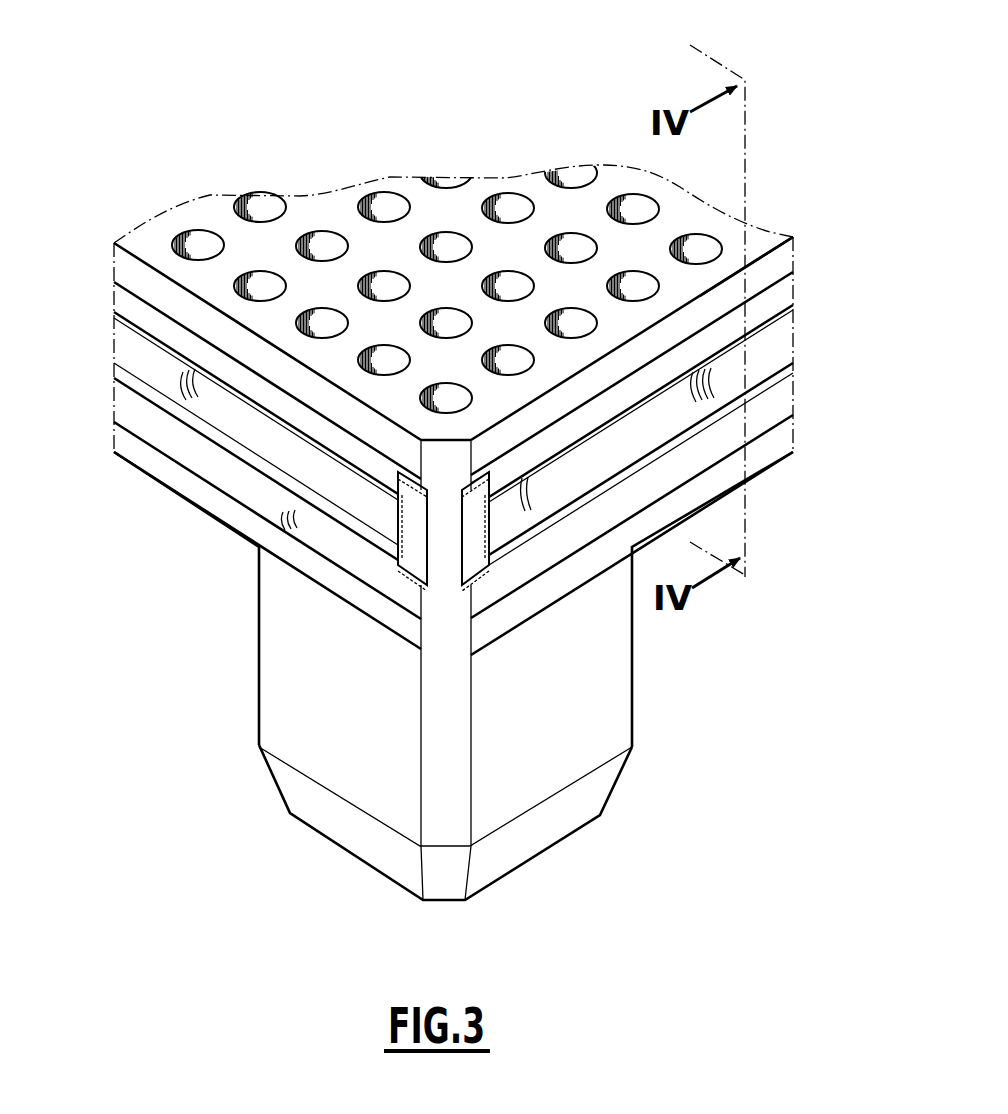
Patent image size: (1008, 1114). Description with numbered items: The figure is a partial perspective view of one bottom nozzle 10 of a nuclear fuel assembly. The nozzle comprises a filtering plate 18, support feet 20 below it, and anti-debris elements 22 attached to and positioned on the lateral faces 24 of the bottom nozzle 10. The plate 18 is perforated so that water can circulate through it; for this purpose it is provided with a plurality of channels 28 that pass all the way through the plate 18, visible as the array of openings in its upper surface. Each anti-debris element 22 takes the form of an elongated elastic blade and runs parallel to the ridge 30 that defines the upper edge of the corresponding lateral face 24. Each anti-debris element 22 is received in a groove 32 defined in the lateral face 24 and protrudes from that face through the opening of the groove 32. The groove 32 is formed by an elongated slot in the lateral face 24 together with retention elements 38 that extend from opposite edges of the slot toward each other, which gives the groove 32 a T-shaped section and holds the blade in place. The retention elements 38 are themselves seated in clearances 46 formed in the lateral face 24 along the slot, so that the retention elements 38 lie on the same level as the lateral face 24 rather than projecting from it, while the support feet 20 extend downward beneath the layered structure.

The bottom nozzle 10 is at (596, 127).
The filtering plate 18 is at (490, 187).
The channels 28 is at (377, 217).
The ridge 30 is at (765, 240).
The retention elements 38 is at (110, 293).
The anti-debris element 22 is at (124, 344).
The groove 32 is at (413, 543).
The clearances 46 is at (412, 468).
The lateral face 24 is at (278, 608).
The support feet 20 is at (325, 750).